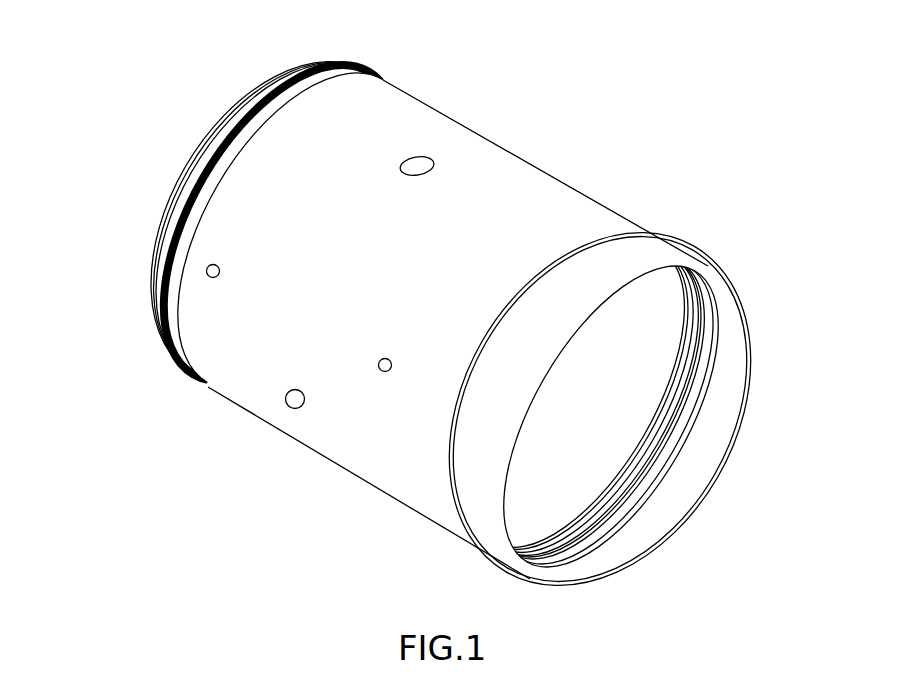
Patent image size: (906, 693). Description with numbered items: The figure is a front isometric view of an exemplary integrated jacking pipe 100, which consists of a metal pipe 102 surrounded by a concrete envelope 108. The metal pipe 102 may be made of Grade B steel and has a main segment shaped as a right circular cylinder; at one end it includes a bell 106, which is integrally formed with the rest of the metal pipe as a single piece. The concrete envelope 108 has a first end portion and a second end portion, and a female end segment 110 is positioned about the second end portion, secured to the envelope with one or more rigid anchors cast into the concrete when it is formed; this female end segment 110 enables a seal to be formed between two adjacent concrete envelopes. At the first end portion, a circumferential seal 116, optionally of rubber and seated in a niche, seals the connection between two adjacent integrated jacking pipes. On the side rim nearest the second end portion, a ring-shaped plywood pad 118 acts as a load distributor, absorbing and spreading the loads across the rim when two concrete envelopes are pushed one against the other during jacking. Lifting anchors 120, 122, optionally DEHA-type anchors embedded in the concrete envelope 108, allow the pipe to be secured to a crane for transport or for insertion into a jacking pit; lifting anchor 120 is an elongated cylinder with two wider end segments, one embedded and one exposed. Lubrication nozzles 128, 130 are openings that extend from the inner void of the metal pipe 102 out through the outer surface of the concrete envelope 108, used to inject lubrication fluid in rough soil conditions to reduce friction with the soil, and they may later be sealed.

The integrated jacking pipe 100 is at (655, 45).
The metal pipe 102 is at (626, 418).
The bell 106 is at (648, 470).
The concrete envelope 108 is at (557, 200).
The female end segment 110 is at (663, 259).
The circumferential seal 116 is at (181, 365).
The ring-shaped plywood pad 118 is at (613, 532).
The lifting anchor 120 is at (210, 264).
The lifting anchor 122 is at (380, 366).
The lubrication nozzle 128 is at (413, 156).
The lubrication nozzle 130 is at (286, 401).